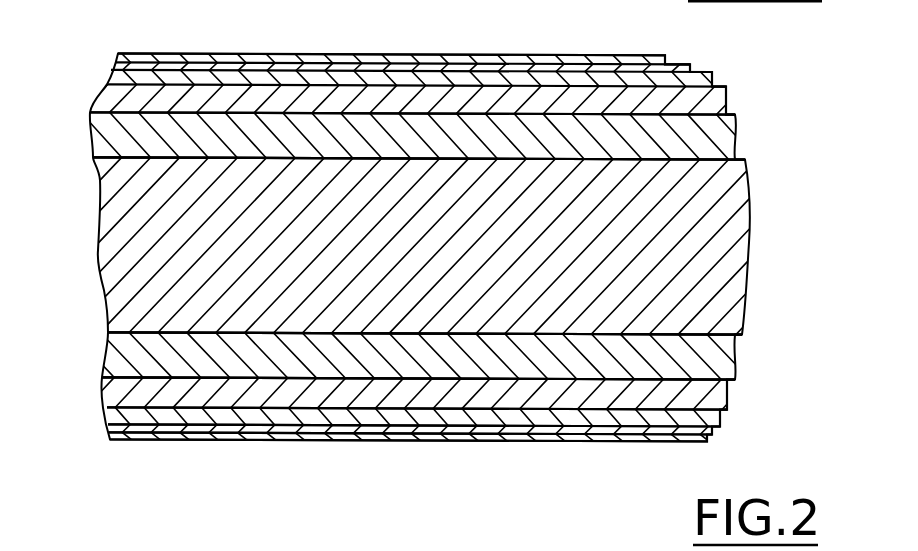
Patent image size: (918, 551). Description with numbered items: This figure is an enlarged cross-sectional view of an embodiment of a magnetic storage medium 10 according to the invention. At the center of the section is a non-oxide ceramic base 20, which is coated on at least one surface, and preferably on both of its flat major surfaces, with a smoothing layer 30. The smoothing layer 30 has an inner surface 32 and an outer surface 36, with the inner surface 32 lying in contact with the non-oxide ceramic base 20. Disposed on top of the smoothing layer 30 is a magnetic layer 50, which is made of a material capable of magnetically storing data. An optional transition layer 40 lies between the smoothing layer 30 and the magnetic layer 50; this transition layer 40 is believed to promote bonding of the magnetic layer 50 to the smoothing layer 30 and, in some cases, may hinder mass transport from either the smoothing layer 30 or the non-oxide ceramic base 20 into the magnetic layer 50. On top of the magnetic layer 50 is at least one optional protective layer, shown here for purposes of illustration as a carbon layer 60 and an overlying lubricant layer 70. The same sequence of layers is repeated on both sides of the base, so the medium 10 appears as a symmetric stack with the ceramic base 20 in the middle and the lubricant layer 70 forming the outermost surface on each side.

The magnetic storage medium 10 is at (110, 52).
The non-oxide ceramic base 20 is at (742, 248).
The smoothing layer 30 is at (735, 135).
The inner surface 32 is at (334, 157).
The outer surface 36 is at (430, 112).
The transition layer 40 is at (727, 95).
The magnetic layer 50 is at (712, 72).
The carbon layer 60 is at (690, 63).
The lubricant layer 70 is at (665, 54).